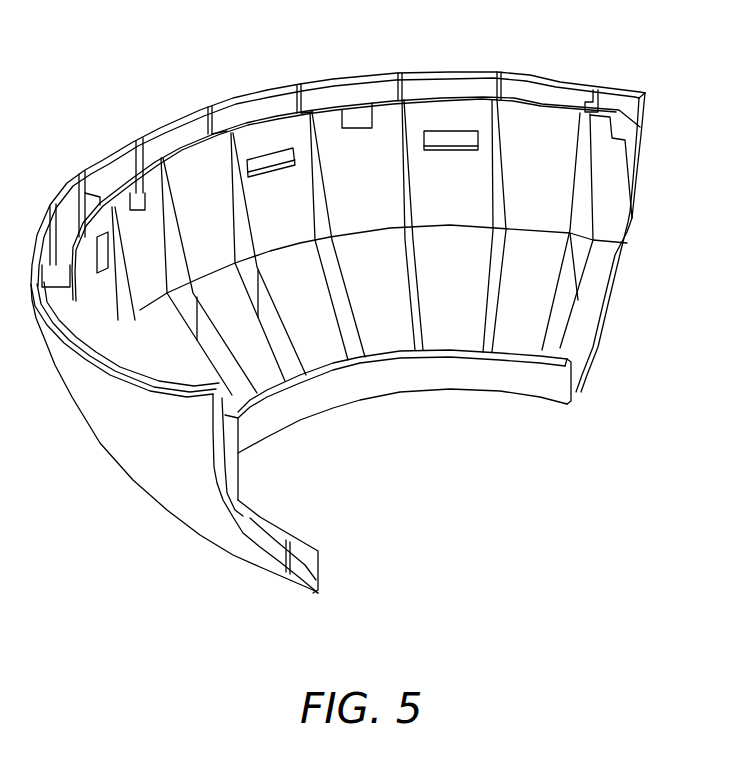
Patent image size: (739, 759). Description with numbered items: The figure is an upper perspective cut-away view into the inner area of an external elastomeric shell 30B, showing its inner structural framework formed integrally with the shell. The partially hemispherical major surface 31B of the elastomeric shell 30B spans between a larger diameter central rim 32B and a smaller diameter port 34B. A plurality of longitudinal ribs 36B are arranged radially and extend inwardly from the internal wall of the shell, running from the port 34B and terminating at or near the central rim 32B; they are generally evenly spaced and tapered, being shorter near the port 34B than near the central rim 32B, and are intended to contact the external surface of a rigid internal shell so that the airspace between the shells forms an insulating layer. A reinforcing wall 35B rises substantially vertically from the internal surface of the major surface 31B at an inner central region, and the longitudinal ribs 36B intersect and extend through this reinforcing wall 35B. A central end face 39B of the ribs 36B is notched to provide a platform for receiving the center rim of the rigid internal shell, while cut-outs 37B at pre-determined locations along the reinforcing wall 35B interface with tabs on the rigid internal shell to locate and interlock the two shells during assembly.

The elastomeric shell 30B is at (100, 558).
The major surface 31B is at (137, 433).
The central rim 32B is at (168, 119).
The port 34B is at (435, 381).
The reinforcing wall 35B is at (608, 173).
The longitudinal ribs 36B is at (583, 247).
The cut-outs 37B is at (267, 157).
The central end face 39B is at (592, 103).